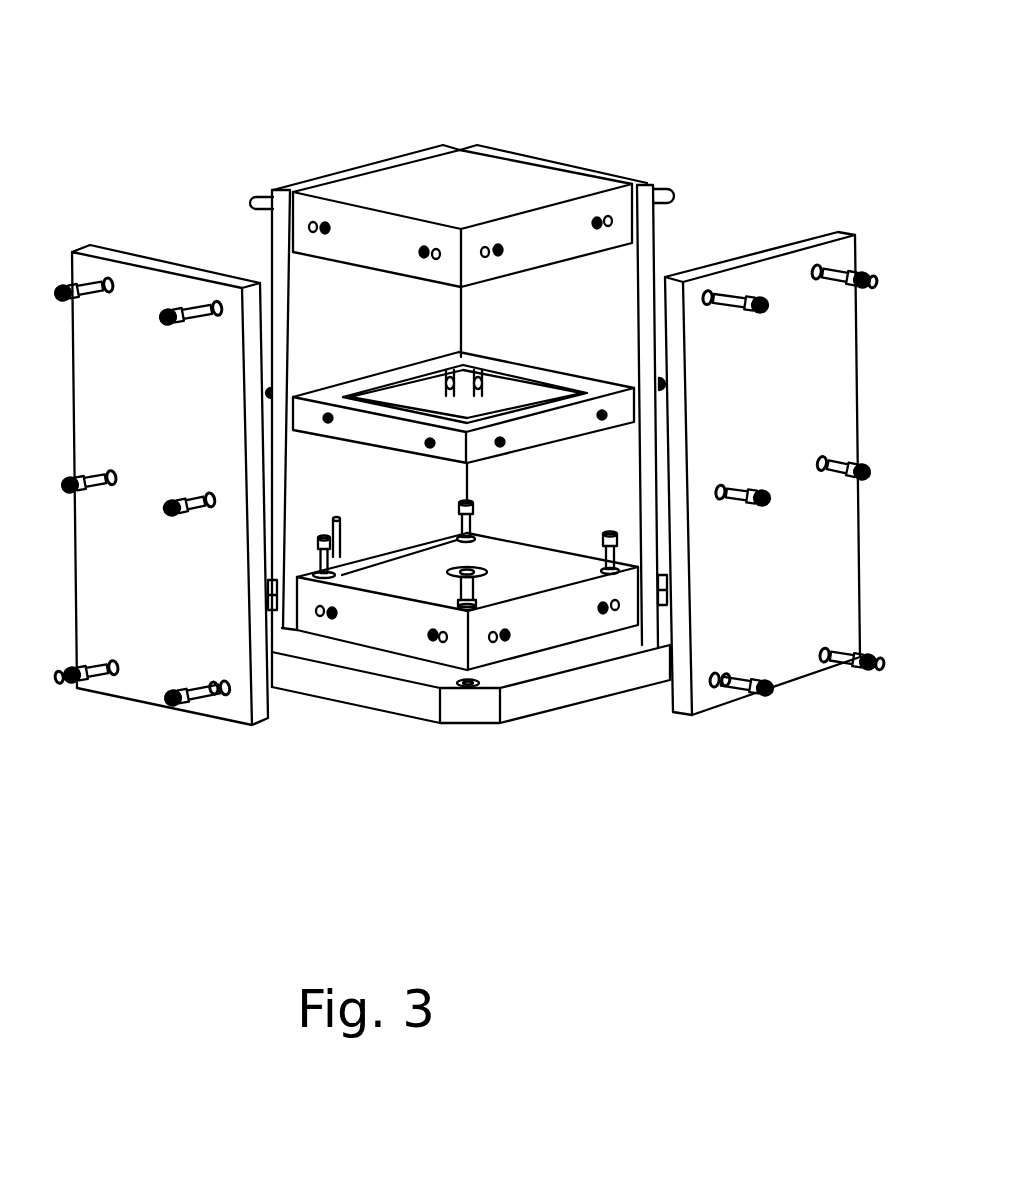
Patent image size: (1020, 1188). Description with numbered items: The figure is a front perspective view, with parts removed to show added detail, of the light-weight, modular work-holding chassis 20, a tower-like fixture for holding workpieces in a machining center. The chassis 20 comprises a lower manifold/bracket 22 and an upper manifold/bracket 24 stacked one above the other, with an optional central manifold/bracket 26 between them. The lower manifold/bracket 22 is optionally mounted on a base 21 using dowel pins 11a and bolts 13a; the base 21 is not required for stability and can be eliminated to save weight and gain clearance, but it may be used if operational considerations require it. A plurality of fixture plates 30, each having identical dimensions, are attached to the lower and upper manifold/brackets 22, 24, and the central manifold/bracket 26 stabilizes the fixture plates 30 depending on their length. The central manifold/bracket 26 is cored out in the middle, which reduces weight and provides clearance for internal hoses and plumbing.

The light-weight, modular work-holding chassis 20 is at (548, 100).
The base 21 is at (538, 698).
The lower manifold/bracket 22 is at (543, 593).
The upper manifold/bracket 24 is at (478, 208).
The central manifold/bracket 26 is at (375, 430).
The fixture plates 30 is at (388, 346).
The dowel pins 11a is at (338, 520).
The bolts 13a is at (470, 570).